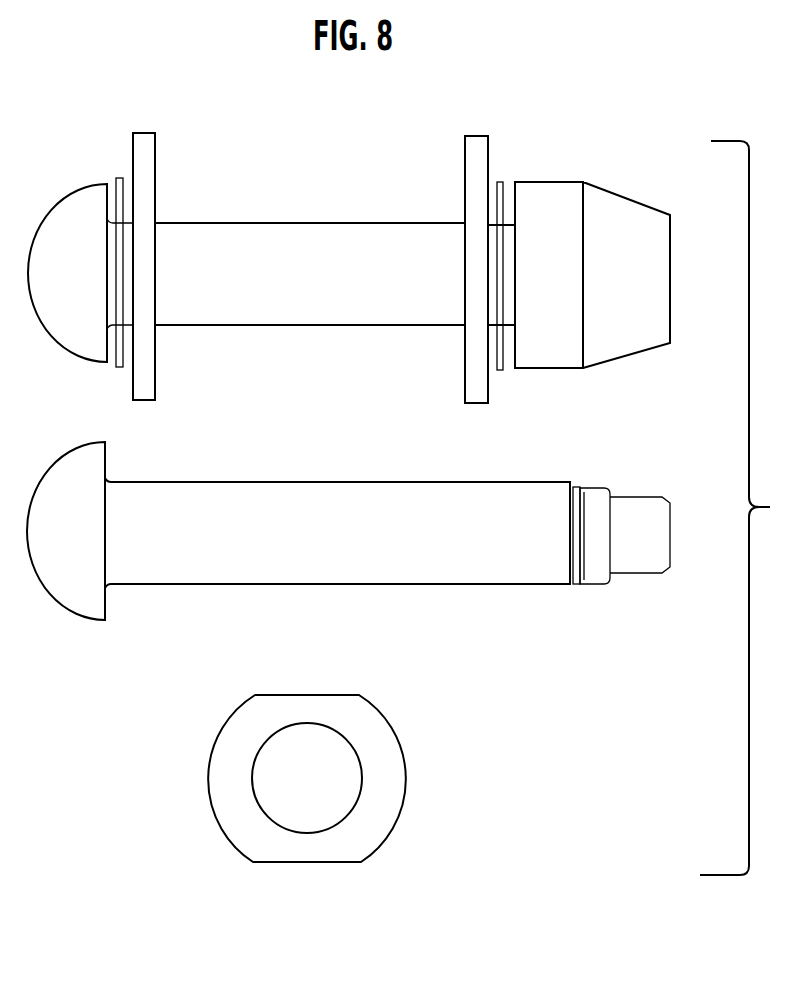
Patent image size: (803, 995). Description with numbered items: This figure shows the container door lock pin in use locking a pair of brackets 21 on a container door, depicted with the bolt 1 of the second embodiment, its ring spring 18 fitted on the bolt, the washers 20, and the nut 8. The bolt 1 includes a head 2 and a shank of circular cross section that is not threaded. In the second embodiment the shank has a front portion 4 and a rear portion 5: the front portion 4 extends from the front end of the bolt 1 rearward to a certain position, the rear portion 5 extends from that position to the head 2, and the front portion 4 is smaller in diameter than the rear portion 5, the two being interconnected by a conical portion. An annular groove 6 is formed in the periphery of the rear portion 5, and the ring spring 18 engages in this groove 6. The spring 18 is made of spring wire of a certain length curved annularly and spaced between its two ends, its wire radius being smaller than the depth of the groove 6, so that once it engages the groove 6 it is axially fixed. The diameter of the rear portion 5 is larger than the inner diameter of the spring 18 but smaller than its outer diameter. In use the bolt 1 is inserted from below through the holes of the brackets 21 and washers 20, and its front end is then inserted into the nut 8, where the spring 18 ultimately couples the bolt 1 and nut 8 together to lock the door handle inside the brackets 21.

The bolt 1 is at (251, 222).
The head 2 is at (52, 490).
The front portion 4 is at (652, 528).
The rear portion 5 is at (330, 490).
The annular groove 6 is at (583, 568).
The nut 8 is at (558, 195).
The ring spring 18 is at (576, 484).
The washers 20 is at (117, 177).
The brackets 21 is at (157, 138).